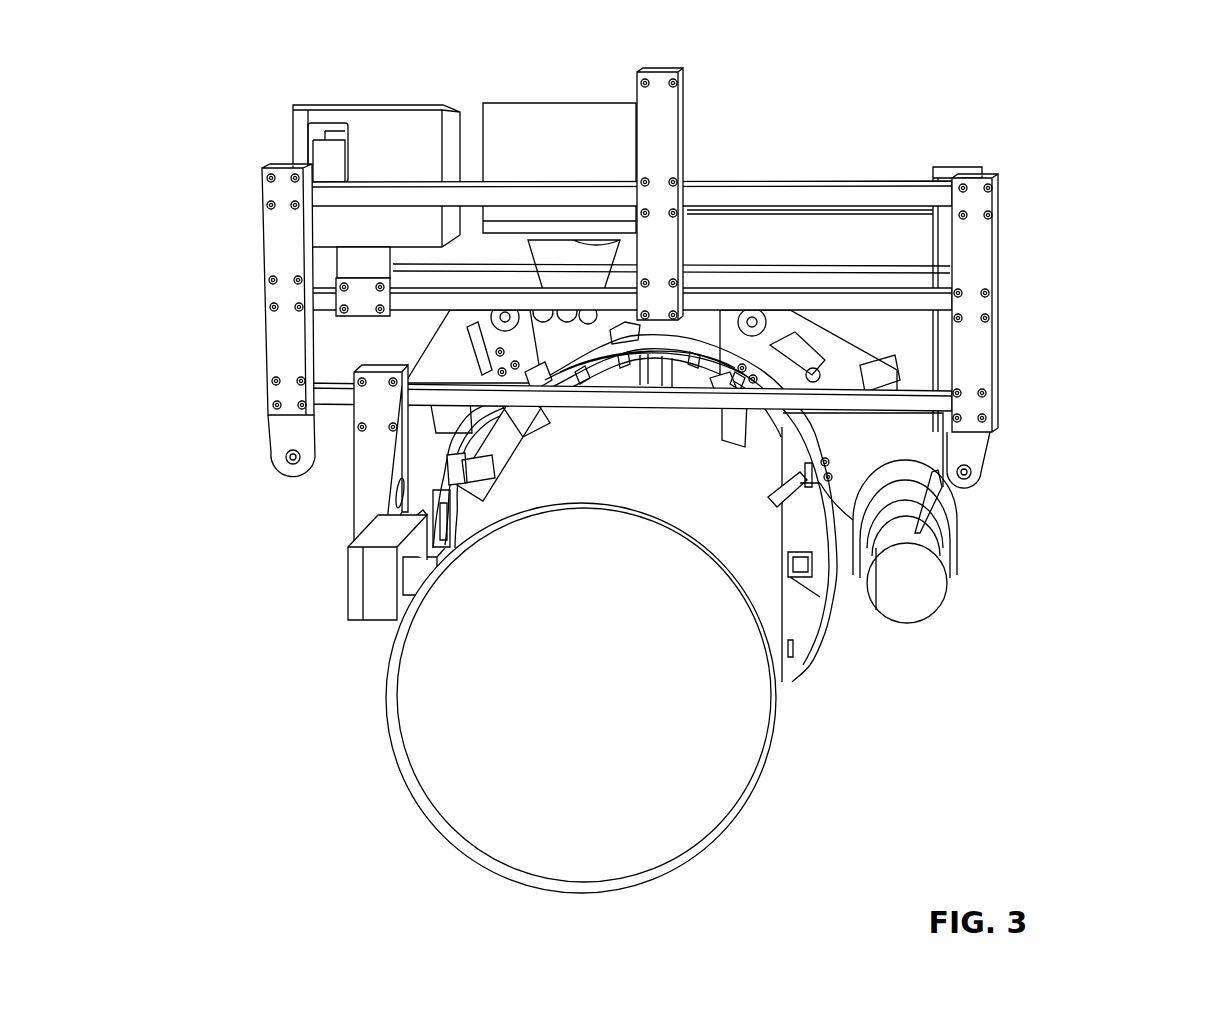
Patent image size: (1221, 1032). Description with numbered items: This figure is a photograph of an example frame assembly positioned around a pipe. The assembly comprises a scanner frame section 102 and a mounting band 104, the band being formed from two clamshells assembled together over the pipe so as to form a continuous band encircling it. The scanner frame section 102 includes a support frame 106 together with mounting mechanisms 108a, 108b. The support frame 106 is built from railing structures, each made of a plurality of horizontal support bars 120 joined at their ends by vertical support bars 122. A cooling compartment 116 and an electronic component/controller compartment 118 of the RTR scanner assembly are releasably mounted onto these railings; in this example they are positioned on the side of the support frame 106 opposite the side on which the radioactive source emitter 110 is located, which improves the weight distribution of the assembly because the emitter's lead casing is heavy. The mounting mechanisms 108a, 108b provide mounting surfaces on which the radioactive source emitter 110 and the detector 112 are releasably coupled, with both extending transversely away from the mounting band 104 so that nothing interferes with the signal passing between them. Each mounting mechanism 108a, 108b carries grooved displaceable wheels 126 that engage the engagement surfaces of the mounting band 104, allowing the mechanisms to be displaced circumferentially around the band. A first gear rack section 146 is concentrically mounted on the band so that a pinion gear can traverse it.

The scanner frame section 102 is at (1127, 45).
The mounting band 104 is at (823, 617).
The support frame 106 is at (258, 245).
The mounting mechanism 108a is at (903, 443).
The mounting mechanism 108b is at (423, 433).
The radioactive source emitter 110 is at (912, 580).
The detector 112 is at (378, 590).
The cooling compartment 116 is at (370, 143).
The electronic component/controller compartment 118 is at (538, 137).
The horizontal support bar 120 is at (792, 195).
The vertical support bar 122 is at (968, 292).
The displaceable wheel 126 is at (463, 476).
The first gear rack section 146 is at (687, 340).